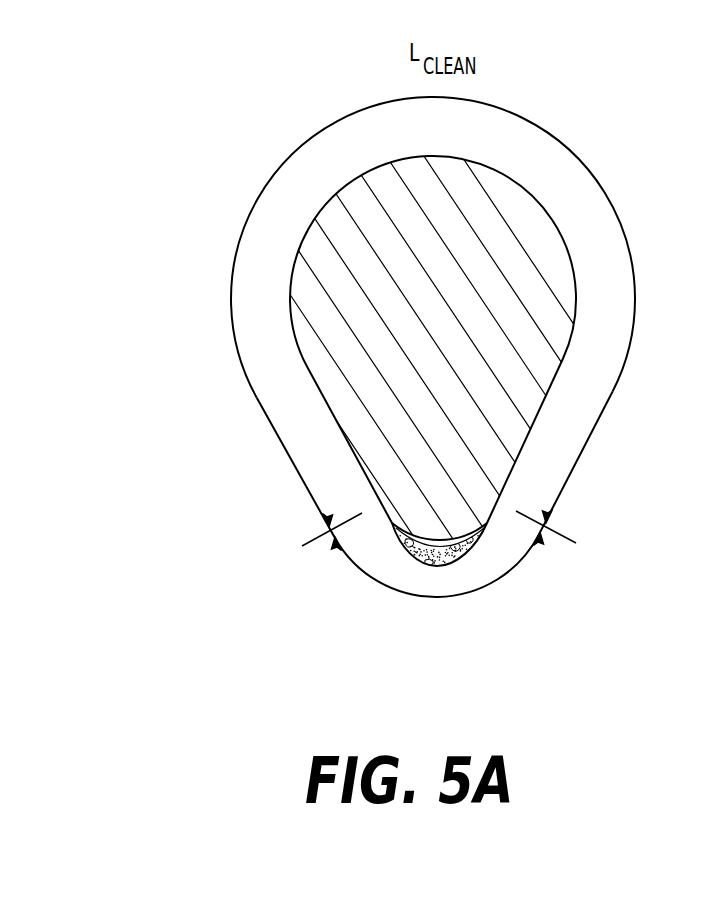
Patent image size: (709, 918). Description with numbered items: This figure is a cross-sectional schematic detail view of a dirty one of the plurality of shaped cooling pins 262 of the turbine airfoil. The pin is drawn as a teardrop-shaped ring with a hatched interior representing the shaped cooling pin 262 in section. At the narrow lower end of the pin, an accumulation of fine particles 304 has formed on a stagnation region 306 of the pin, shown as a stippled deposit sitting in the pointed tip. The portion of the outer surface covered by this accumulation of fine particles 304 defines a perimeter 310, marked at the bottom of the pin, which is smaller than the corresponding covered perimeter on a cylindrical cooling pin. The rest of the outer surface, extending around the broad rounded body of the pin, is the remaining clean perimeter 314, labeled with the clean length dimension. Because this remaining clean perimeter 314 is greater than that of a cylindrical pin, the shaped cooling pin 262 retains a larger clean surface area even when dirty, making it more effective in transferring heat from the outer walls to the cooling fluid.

The remaining clean perimeter 314 is at (580, 146).
The perimeter covered by the accumulation of fine particles 310 is at (508, 568).
The shaped cooling pin 262 is at (291, 317).
The accumulation of fine particles 304 is at (447, 560).
The stagnation region 306 is at (427, 556).